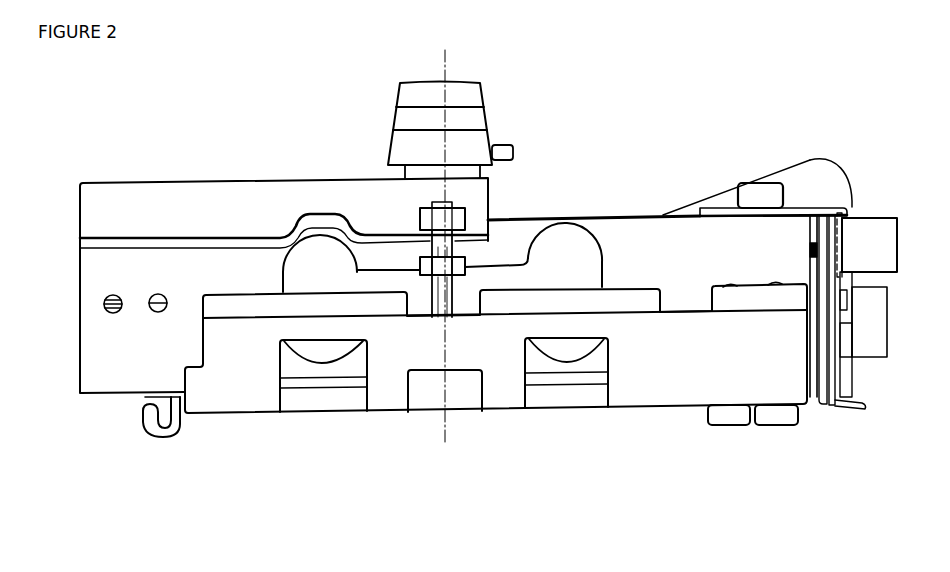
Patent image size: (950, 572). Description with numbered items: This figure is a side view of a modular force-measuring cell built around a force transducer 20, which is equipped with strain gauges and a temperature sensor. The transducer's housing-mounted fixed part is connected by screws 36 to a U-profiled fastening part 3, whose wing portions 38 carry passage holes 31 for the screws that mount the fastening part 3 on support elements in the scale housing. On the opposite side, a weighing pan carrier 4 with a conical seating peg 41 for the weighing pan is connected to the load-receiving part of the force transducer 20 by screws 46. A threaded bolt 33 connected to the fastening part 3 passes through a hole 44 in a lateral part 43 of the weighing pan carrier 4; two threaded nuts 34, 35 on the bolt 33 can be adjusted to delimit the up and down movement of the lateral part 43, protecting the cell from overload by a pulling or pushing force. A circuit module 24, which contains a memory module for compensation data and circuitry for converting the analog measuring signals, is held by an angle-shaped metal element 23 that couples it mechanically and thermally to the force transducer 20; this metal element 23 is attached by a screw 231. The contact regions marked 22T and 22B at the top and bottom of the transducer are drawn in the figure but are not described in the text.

The fastening part 3 is at (245, 382).
The weighing pan carrier 4 is at (277, 167).
The force transducer 20 is at (127, 386).
The top contact plate 22T is at (802, 157).
The bottom contact plate 22B is at (824, 154).
The metal element 23 is at (722, 205).
The screw 231 is at (753, 181).
The circuit module 24 is at (870, 218).
The passage holes 31 is at (233, 290).
The threaded bolt 33 is at (455, 286).
The threaded nut 34 is at (465, 267).
The threaded nut 35 is at (466, 211).
The screws 36 is at (776, 426).
The wing portions 38 is at (630, 302).
The conical seating peg 41 is at (458, 117).
The lateral part 43 is at (395, 233).
The hole 44 is at (427, 249).
The screws 46 is at (110, 182).